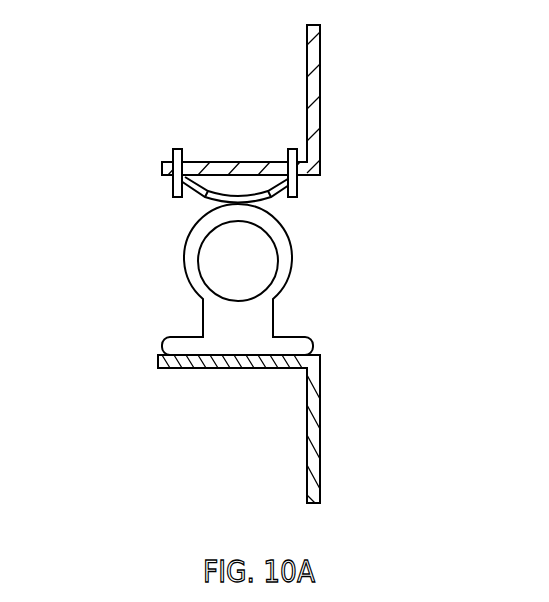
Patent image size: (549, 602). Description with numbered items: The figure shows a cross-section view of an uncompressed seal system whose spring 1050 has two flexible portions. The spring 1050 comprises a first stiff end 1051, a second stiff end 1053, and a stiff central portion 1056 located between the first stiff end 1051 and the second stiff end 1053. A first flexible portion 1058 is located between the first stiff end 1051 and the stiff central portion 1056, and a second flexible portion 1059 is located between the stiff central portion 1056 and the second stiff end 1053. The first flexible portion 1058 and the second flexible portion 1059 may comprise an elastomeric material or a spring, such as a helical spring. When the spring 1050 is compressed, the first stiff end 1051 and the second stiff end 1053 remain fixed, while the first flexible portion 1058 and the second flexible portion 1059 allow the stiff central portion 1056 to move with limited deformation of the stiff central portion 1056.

The spring 1050 is at (322, 232).
The first stiff end 1051 is at (173, 181).
The second stiff end 1053 is at (299, 181).
The stiff central portion 1056 is at (231, 198).
The first flexible portion 1058 is at (200, 200).
The second flexible portion 1059 is at (237, 200).